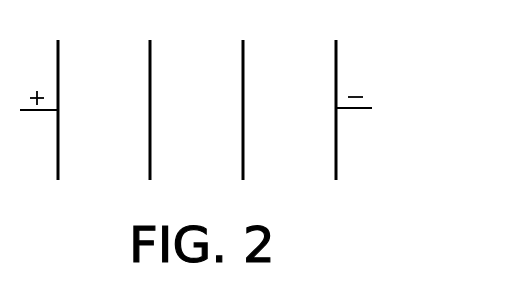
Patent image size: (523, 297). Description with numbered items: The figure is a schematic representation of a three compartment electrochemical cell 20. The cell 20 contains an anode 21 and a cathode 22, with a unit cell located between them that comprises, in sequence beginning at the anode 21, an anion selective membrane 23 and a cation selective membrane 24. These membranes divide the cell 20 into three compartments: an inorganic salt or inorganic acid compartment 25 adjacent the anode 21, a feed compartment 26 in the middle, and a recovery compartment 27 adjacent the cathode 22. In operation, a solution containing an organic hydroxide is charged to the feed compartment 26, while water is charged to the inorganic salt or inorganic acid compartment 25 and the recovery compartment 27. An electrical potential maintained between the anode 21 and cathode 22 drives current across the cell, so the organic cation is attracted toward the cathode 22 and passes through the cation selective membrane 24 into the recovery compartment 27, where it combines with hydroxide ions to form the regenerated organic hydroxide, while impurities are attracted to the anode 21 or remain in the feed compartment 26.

The electrochemical cell 20 is at (397, 50).
The anode 21 is at (42, 95).
The cathode 22 is at (343, 95).
The anion selective membrane 23 is at (148, 114).
The cation selective membrane 24 is at (241, 114).
The inorganic salt or inorganic acid compartment 25 is at (102, 170).
The feed compartment 26 is at (195, 170).
The recovery compartment 27 is at (287, 170).